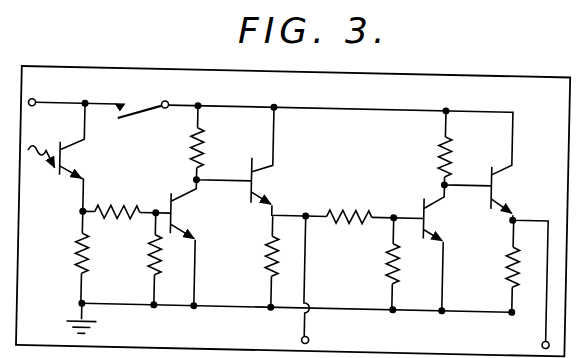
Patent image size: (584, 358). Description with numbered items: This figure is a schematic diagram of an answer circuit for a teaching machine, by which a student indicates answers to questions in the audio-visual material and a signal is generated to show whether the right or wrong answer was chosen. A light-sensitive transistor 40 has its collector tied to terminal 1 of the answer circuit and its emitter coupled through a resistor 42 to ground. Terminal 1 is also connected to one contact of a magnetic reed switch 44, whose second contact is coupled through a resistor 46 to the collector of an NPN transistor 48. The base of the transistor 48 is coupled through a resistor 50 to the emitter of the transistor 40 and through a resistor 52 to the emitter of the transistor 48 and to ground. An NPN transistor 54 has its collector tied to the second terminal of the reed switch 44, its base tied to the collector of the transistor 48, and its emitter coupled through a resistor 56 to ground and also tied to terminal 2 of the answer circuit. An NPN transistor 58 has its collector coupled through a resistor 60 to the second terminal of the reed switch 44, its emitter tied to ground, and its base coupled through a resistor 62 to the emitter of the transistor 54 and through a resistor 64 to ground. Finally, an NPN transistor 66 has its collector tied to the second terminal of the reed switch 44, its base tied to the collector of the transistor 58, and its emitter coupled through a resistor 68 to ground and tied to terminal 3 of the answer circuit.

The terminal 1 is at (33, 92).
The terminal 2 is at (314, 339).
The terminal 3 is at (536, 345).
The light-sensitive transistor 40 is at (59, 143).
The resistor 42 is at (77, 250).
The magnetic reed switch 44 is at (151, 110).
The resistor 46 is at (190, 148).
The NPN transistor 48 is at (170, 194).
The resistor 50 is at (124, 204).
The resistor 52 is at (151, 243).
The NPN transistor 54 is at (249, 171).
The resistor 56 is at (266, 250).
The NPN transistor 58 is at (421, 199).
The resistor 60 is at (437, 156).
The resistor 62 is at (352, 205).
The resistor 64 is at (386, 252).
The NPN transistor 66 is at (489, 163).
The resistor 68 is at (506, 254).